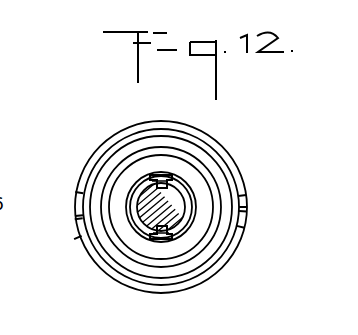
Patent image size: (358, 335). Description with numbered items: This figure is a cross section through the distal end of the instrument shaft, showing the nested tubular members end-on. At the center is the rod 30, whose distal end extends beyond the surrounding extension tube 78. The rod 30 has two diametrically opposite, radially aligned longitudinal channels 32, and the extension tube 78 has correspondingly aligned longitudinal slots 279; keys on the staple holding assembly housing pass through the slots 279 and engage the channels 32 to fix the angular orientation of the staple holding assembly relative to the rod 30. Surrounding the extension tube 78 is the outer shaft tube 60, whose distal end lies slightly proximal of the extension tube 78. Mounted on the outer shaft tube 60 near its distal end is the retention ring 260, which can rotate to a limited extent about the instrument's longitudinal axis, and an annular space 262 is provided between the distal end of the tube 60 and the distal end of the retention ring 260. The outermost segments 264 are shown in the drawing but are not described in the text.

The rod 30 is at (188, 197).
The channels 32 is at (150, 183).
The outer shaft tube 60 is at (155, 238).
The extension tube 78 is at (152, 185).
The retention ring 260 is at (220, 148).
The annular space 262 is at (180, 258).
The slotted segment 264 is at (76, 206).
The slots 279 is at (172, 178).